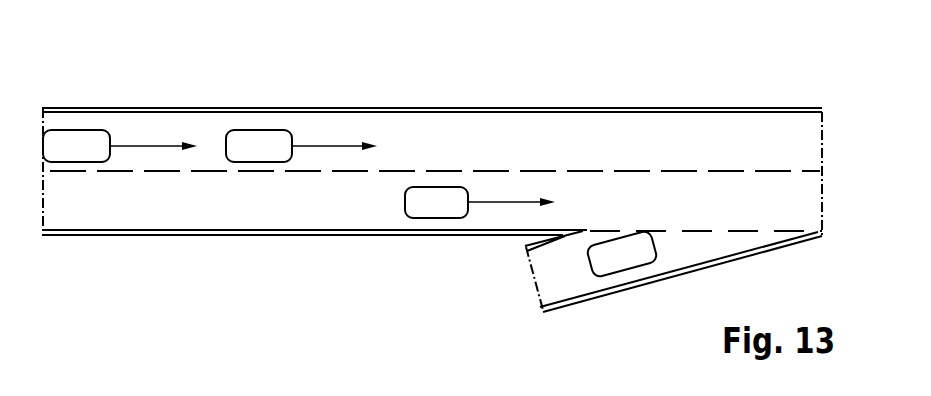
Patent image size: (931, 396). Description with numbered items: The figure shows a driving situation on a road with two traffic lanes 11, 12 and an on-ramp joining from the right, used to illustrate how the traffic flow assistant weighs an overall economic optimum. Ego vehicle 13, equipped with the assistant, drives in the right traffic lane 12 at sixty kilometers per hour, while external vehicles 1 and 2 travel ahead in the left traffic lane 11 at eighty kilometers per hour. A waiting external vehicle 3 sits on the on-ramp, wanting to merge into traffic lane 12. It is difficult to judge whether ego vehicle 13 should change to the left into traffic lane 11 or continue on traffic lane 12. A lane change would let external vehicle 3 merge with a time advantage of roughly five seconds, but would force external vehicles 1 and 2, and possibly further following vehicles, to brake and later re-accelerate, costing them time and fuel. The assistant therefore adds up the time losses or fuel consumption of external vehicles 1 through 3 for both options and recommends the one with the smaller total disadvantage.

The external vehicle 1 is at (85, 157).
The external vehicle 2 is at (267, 157).
The external vehicle 3 is at (615, 265).
The traffic lane 11 is at (766, 154).
The traffic lane 12 is at (766, 211).
The ego vehicle 13 is at (449, 214).